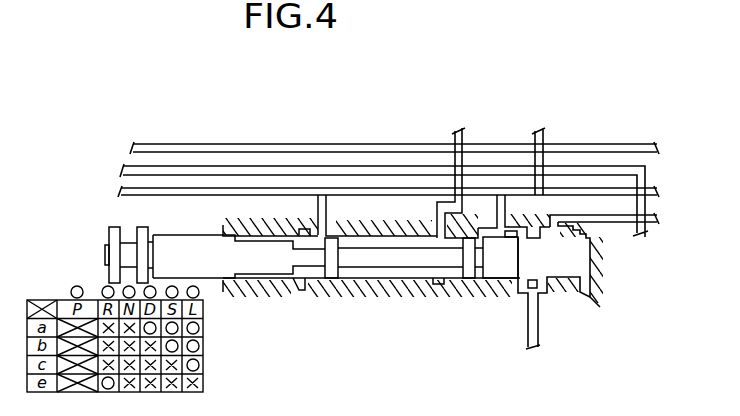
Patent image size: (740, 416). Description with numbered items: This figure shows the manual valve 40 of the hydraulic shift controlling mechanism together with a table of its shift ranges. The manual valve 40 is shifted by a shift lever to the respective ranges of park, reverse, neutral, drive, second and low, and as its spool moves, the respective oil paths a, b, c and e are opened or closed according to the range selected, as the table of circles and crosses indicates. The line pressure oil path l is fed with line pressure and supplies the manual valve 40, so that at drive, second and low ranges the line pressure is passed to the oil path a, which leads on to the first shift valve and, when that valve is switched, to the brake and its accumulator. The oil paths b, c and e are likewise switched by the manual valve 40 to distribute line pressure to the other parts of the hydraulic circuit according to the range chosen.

The manual valve 40 is at (98, 224).
The oil path a is at (514, 183).
The oil path b is at (550, 293).
The oil path c is at (604, 253).
The oil path e is at (377, 215).
The line pressure oil path l is at (449, 183).